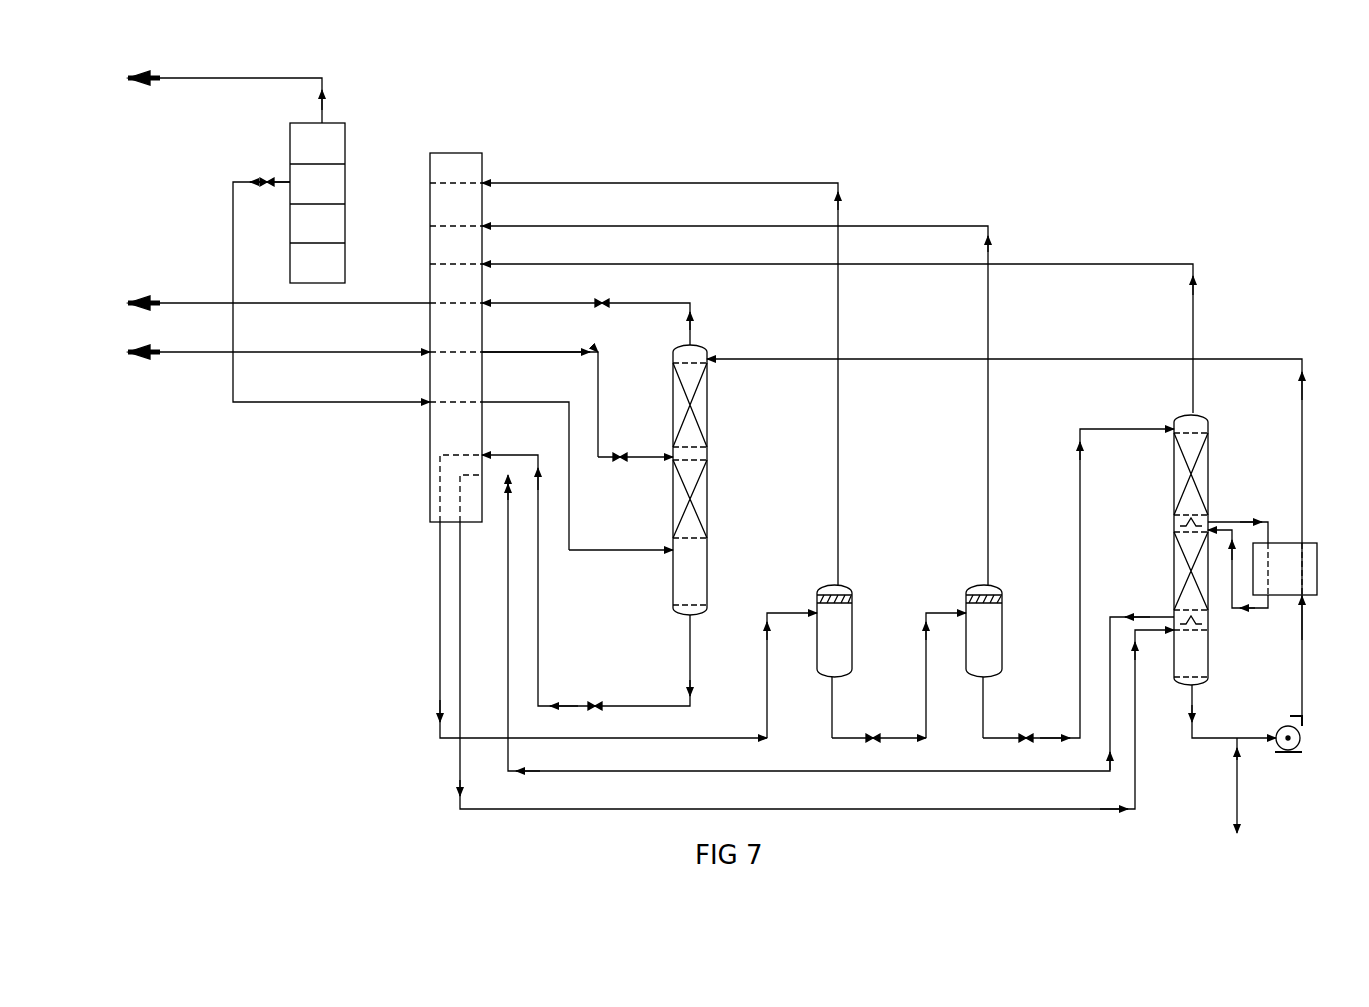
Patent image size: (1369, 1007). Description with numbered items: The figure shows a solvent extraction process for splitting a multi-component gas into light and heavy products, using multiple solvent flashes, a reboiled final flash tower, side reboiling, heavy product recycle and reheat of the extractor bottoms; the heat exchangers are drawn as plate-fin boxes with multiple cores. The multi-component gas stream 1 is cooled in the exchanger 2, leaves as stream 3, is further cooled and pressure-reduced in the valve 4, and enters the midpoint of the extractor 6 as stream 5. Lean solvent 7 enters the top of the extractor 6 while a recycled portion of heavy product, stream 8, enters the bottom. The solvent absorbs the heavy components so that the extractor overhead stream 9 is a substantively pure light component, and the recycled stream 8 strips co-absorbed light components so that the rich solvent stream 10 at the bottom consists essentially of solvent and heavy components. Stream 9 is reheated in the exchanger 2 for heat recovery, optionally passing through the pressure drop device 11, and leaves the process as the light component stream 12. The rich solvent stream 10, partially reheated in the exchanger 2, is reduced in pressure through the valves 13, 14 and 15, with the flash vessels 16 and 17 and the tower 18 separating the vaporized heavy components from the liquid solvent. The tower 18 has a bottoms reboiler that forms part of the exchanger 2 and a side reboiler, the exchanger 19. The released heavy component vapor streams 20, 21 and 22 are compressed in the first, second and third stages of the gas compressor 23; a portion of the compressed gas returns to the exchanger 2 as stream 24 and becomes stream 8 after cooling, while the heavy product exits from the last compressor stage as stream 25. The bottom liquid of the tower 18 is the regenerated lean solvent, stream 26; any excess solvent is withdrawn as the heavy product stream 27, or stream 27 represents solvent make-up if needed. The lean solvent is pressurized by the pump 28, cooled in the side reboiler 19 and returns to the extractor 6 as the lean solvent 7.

The multi-component gas stream 1 is at (279, 340).
The exchanger 2 is at (428, 476).
The stream 3 is at (540, 388).
The valve 4 is at (624, 470).
The stream 5 is at (635, 443).
The extractor 6 is at (712, 450).
The lean solvent 7 is at (1004, 528).
The stream 8 is at (621, 535).
The extractor overhead stream 9 is at (586, 310).
The rich solvent stream 10 is at (586, 580).
The pressure drop device 11 is at (614, 313).
The light component stream 12 is at (279, 292).
The valve 13 is at (600, 716).
The valve 14 is at (880, 748).
The valve 15 is at (1032, 749).
The flash vessel 16 is at (854, 652).
The flash vessel 17 is at (1005, 659).
The tower 18 is at (1170, 522).
The side reboiler 19 is at (1322, 597).
The heavy component vapor stream 20 is at (660, 369).
The heavy component vapor stream 21 is at (735, 390).
The heavy component vapor stream 22 is at (837, 324).
The gas compressor 23 is at (288, 262).
The stream 24 is at (401, 364).
The stream 25 is at (225, 86).
The stream 26 is at (1234, 711).
The heavy product stream 27 is at (1214, 785).
The pump 28 is at (1300, 760).